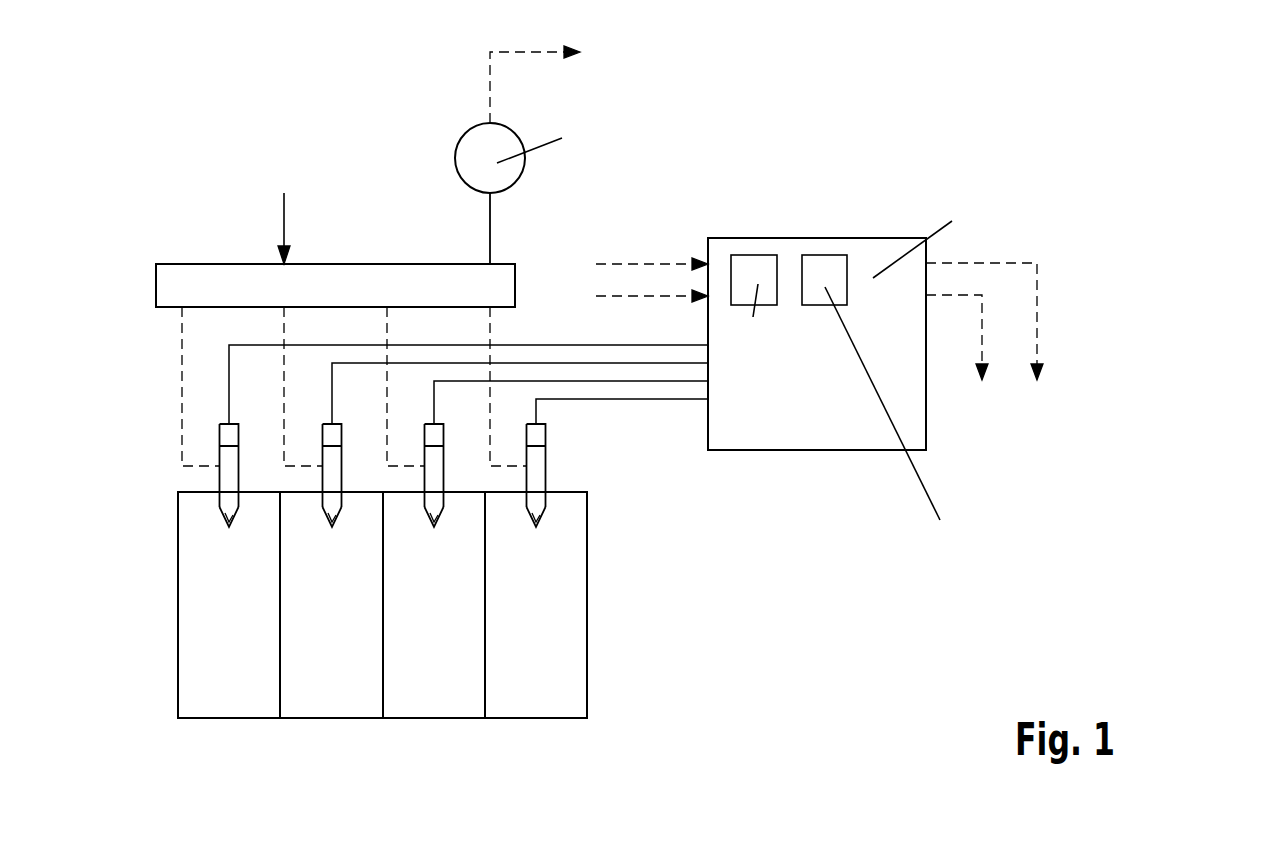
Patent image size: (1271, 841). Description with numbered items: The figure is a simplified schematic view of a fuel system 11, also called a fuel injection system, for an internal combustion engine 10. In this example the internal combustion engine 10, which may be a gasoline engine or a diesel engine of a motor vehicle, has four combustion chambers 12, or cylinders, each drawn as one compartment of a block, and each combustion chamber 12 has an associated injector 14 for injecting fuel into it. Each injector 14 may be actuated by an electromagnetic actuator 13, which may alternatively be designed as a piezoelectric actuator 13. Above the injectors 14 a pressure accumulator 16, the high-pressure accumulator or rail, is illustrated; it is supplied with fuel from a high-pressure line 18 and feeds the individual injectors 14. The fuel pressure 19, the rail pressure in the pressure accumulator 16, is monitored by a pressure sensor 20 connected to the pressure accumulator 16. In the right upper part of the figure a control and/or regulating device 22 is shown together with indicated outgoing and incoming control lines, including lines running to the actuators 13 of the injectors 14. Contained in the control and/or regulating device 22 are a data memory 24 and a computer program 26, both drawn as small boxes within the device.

The internal combustion engine 10 is at (684, 556).
The fuel system 11 is at (158, 118).
The combustion chambers 12 is at (228, 700).
The electromagnetic actuator 13 is at (236, 436).
The injectors 14 is at (229, 527).
The pressure accumulator 16 is at (353, 264).
The high-pressure line 18 is at (284, 213).
The fuel pressure 19 is at (476, 228).
The pressure sensor 20 is at (455, 158).
The control and/or regulating device 22 is at (898, 238).
The data memory 24 is at (753, 255).
The computer program 26 is at (820, 255).